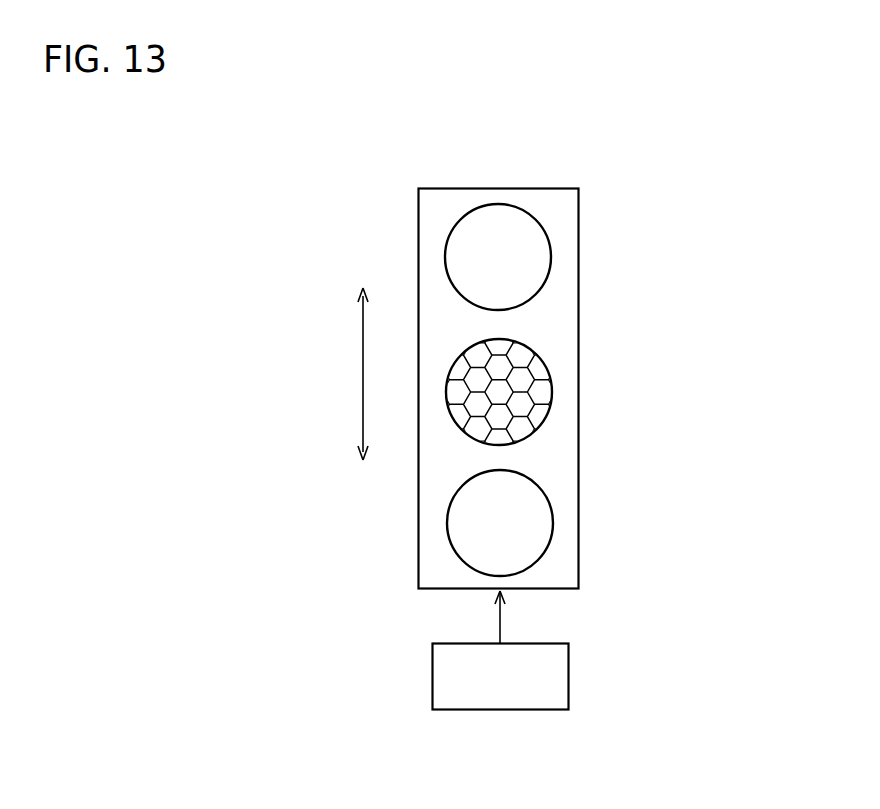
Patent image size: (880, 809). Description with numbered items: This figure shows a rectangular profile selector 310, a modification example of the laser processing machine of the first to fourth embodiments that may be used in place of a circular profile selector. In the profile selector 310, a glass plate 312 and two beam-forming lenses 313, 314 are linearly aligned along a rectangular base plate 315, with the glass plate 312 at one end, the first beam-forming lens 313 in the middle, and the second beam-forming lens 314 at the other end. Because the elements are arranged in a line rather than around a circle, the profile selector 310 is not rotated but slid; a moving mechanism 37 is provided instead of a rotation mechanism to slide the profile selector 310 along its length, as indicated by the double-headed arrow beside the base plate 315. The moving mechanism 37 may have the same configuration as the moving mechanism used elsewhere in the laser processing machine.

The profile selector 310 is at (514, 188).
The glass plate 312 is at (542, 255).
The beam-forming lens 313 is at (542, 388).
The beam-forming lens 314 is at (542, 517).
The rectangular base plate 315 is at (565, 327).
The moving mechanism 37 is at (569, 683).